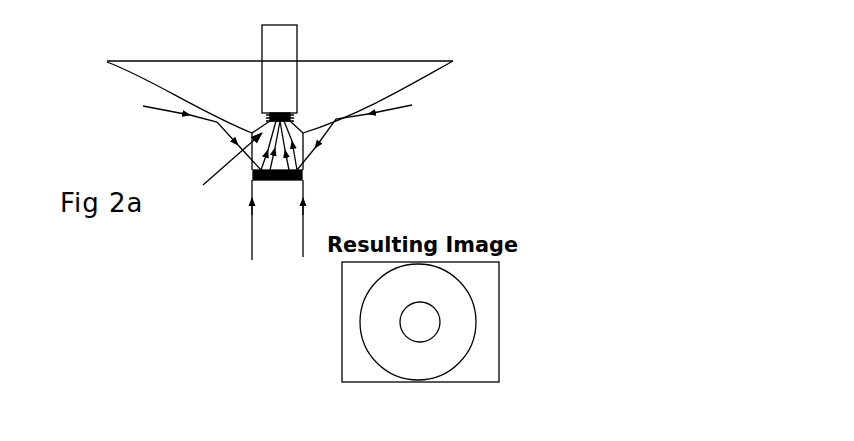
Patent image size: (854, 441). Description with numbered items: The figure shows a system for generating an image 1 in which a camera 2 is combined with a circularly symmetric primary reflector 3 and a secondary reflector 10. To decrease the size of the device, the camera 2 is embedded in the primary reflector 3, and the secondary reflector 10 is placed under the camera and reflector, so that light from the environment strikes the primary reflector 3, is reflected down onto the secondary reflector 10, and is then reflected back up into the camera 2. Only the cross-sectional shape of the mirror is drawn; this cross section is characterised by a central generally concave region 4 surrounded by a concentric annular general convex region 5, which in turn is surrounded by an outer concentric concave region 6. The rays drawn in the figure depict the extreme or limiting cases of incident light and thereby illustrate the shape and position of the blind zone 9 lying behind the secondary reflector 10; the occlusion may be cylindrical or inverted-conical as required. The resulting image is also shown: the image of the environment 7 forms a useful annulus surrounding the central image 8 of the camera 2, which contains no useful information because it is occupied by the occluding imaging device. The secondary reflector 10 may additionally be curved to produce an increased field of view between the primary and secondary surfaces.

The system for generating an image 1 is at (165, 233).
The camera 2 is at (298, 47).
The primary reflector 3 is at (387, 60).
The central generally concave region 4 is at (211, 154).
The concentric annular general convex region 5 is at (312, 132).
The outer concentric concave region 6 is at (406, 82).
The image of the environment 7 is at (377, 322).
The image of the camera 8 is at (412, 332).
The blind zone 9 is at (263, 288).
The secondary reflector 10 is at (303, 177).